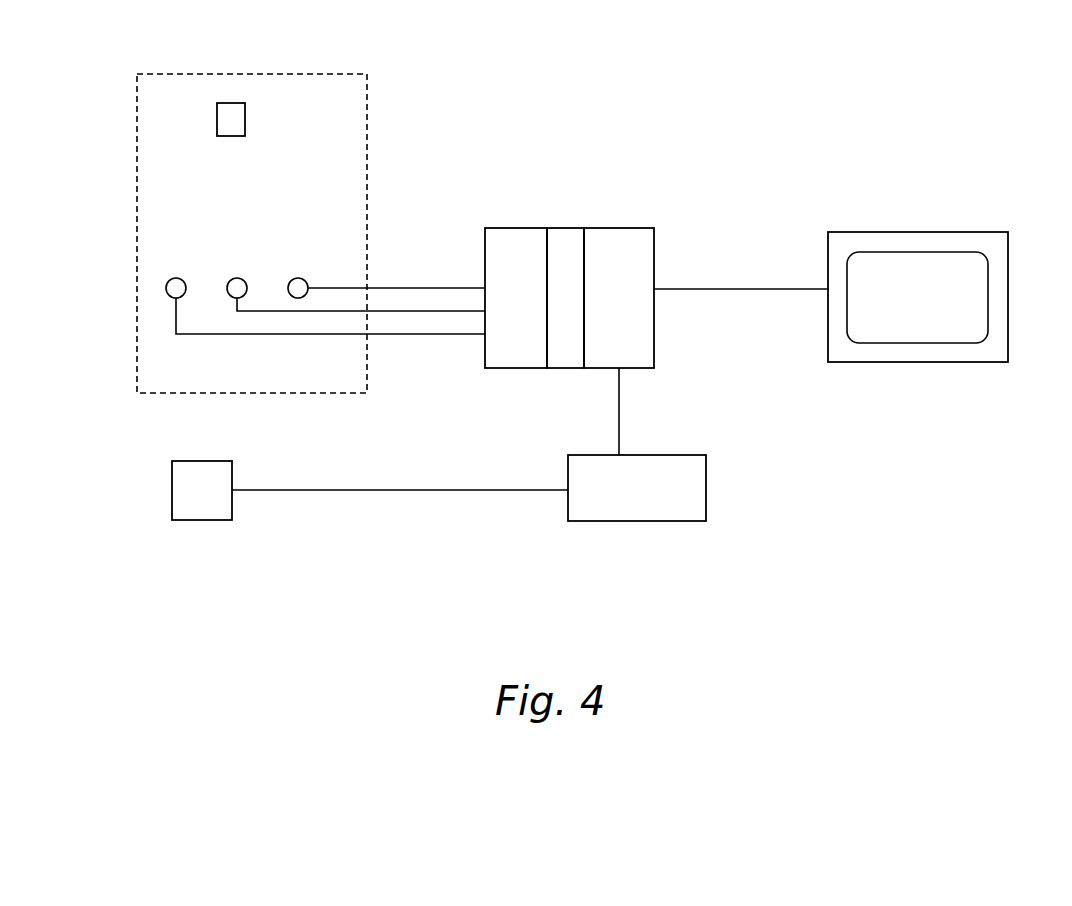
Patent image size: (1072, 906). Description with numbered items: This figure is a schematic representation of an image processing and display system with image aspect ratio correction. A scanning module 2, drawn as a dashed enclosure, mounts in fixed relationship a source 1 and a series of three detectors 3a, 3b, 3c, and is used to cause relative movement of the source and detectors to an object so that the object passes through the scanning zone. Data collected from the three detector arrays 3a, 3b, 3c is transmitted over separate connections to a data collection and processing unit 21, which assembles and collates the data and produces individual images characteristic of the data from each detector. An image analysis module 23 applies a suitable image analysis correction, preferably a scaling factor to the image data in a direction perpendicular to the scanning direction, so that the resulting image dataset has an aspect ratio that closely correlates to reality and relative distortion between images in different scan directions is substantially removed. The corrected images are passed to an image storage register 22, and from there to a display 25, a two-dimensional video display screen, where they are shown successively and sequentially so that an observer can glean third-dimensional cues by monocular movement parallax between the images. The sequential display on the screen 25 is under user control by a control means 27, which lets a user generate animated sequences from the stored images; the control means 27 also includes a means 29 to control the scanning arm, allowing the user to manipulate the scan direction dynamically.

The source 1 is at (217, 119).
The scanning module 2 is at (168, 74).
The detector 3a is at (168, 291).
The detector 3b is at (239, 279).
The detector 3c is at (302, 279).
The data collection and processing unit 21 is at (525, 245).
The image storage register 22 is at (615, 245).
The image analysis module 23 is at (566, 243).
The display 25 is at (918, 232).
The control means 27 is at (636, 503).
The means to control the scanning arm 29 is at (202, 505).